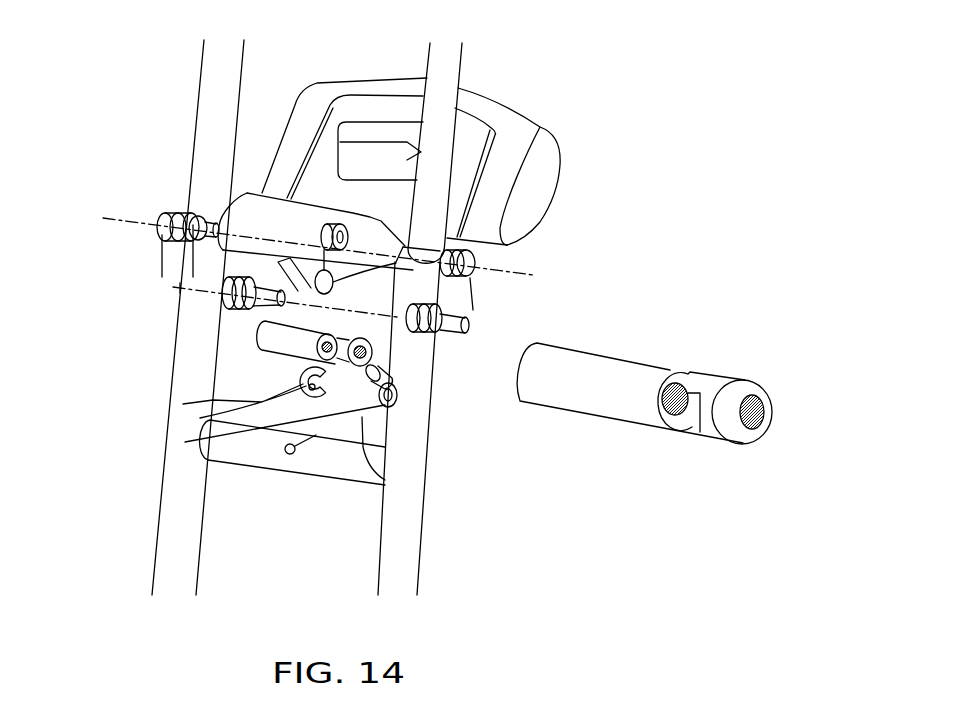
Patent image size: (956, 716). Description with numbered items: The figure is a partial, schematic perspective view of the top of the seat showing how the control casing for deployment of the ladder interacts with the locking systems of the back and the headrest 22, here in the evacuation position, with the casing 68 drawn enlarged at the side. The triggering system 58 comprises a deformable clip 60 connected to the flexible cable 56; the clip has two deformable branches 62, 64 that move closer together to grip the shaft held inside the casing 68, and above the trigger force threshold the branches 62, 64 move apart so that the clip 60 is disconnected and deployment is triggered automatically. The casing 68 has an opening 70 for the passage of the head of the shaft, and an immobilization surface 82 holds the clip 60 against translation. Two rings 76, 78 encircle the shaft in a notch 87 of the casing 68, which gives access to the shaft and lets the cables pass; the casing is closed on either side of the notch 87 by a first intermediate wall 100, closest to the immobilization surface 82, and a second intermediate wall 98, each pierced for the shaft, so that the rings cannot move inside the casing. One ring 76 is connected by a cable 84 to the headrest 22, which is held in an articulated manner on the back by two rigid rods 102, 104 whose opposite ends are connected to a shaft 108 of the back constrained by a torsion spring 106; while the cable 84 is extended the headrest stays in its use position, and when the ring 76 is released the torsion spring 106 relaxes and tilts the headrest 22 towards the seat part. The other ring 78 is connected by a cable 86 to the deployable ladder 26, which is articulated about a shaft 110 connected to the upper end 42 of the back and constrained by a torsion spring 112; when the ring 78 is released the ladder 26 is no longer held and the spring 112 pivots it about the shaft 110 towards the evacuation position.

The headrest 22 is at (523, 133).
The deployable ladder 26 is at (183, 404).
The upper end of the back 42 is at (263, 215).
The flexible cable 56 is at (197, 437).
The triggering system 58 is at (245, 334).
The deformable clip 60 is at (197, 438).
The deformable branch 62 is at (297, 365).
The deformable branch 64 is at (333, 388).
The casing 68 is at (290, 338).
The opening 70 is at (750, 405).
The ring 76 is at (518, 274).
The ring 78 is at (400, 390).
The immobilization surface 82 is at (768, 412).
The cable 84 is at (353, 217).
The cable 86 is at (388, 410).
The notch 87 is at (698, 418).
The second intermediate wall 98 is at (684, 374).
The first intermediate wall 100 is at (716, 402).
The rigid rod 102 is at (177, 276).
The rigid rod 104 is at (460, 241).
The torsion spring 106 is at (219, 290).
The shaft of the back 108 is at (318, 268).
The shaft 110 is at (163, 215).
The torsion spring 112 is at (172, 214).